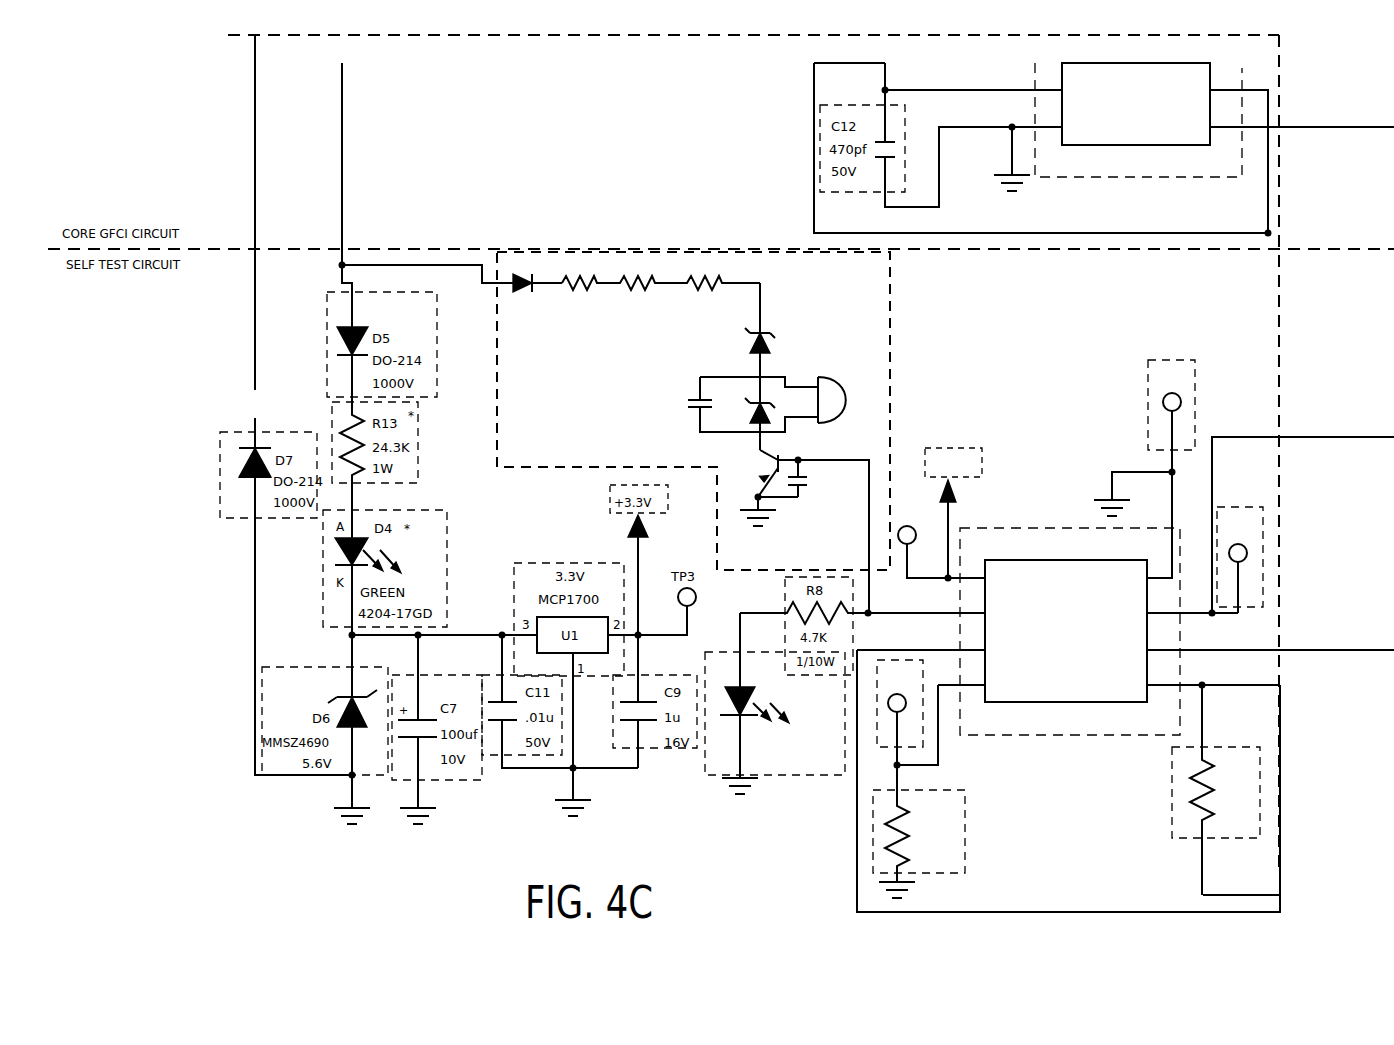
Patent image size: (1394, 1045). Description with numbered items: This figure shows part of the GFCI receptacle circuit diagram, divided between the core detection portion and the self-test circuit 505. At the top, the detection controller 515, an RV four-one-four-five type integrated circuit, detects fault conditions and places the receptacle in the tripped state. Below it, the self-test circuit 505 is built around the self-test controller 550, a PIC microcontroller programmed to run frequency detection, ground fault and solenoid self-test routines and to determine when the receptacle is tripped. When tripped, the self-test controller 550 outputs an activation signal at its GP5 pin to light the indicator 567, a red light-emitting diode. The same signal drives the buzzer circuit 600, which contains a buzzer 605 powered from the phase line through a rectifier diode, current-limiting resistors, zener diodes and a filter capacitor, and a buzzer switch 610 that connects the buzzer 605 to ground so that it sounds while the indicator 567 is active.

The detection controller 515 is at (1088, 145).
The buzzer 605 is at (840, 387).
The buzzer switch 610 is at (782, 455).
The buzzer circuit 600 is at (694, 432).
The indicator 567 is at (735, 683).
The self-test controller 550 is at (1022, 560).
The self-test circuit 505 is at (1067, 656).